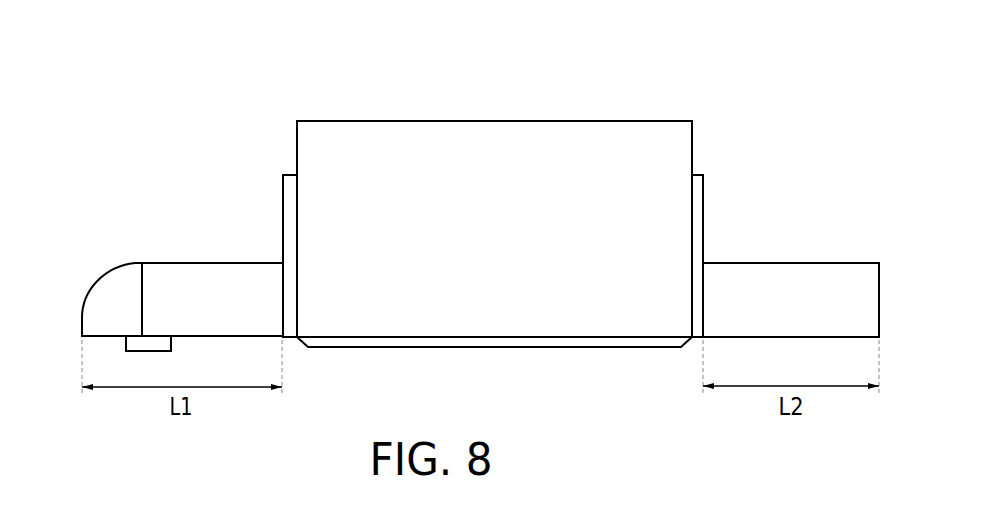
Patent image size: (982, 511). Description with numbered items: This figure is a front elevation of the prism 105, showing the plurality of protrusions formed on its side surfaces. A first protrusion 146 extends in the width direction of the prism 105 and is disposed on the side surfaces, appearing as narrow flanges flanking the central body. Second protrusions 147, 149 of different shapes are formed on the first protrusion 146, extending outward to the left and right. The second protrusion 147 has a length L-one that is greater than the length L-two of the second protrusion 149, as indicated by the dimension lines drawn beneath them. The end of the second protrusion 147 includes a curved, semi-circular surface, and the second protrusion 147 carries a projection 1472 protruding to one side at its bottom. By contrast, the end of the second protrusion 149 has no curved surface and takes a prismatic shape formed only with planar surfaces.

The prism 105 is at (713, 113).
The first protrusion 146 is at (280, 190).
The second protrusion 147 is at (200, 263).
The projection 1472 is at (137, 342).
The second protrusion 149 is at (788, 263).